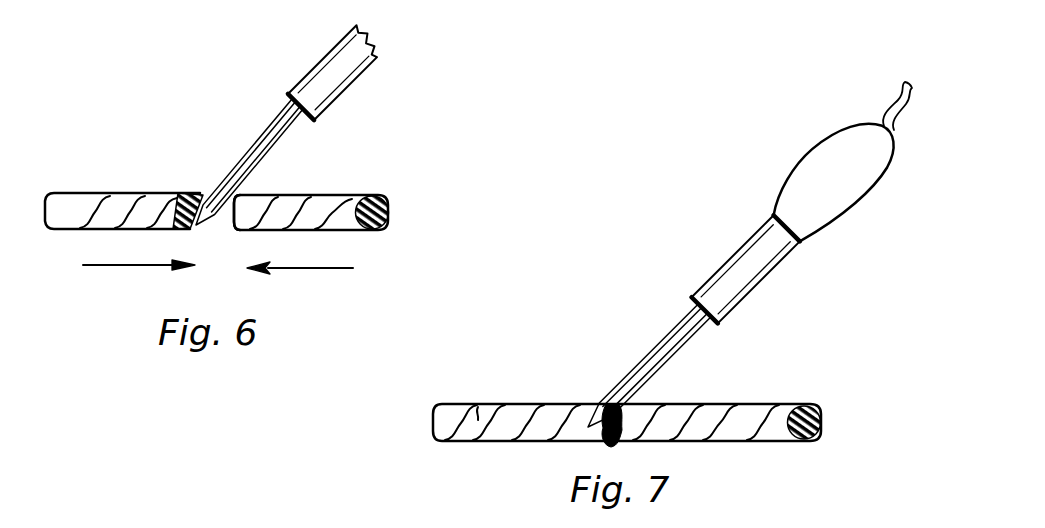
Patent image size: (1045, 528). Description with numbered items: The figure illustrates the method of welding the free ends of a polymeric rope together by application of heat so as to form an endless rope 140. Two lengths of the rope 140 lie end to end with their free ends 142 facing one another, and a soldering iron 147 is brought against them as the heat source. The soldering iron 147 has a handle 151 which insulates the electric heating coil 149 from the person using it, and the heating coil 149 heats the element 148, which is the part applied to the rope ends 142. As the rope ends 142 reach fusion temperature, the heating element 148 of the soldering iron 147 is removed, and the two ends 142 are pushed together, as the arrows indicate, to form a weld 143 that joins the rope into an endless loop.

In FIG. 6, the endless rope 140 is at (80, 212).
In FIG. 7, the endless rope 140 is at (479, 408).
In FIG. 6, the free ends of the rope 142 is at (200, 194).
In FIG. 7, the weld 143 is at (622, 447).
In FIG. 6, the soldering iron 147 is at (283, 82).
In FIG. 7, the soldering iron 147 is at (689, 206).
In FIG. 6, the heating element 148 is at (236, 165).
In FIG. 7, the heating element 148 is at (600, 390).
In FIG. 6, the electric heating coil 149 is at (352, 84).
In FIG. 7, the electric heating coil 149 is at (716, 286).
In FIG. 7, the handle 151 is at (798, 182).